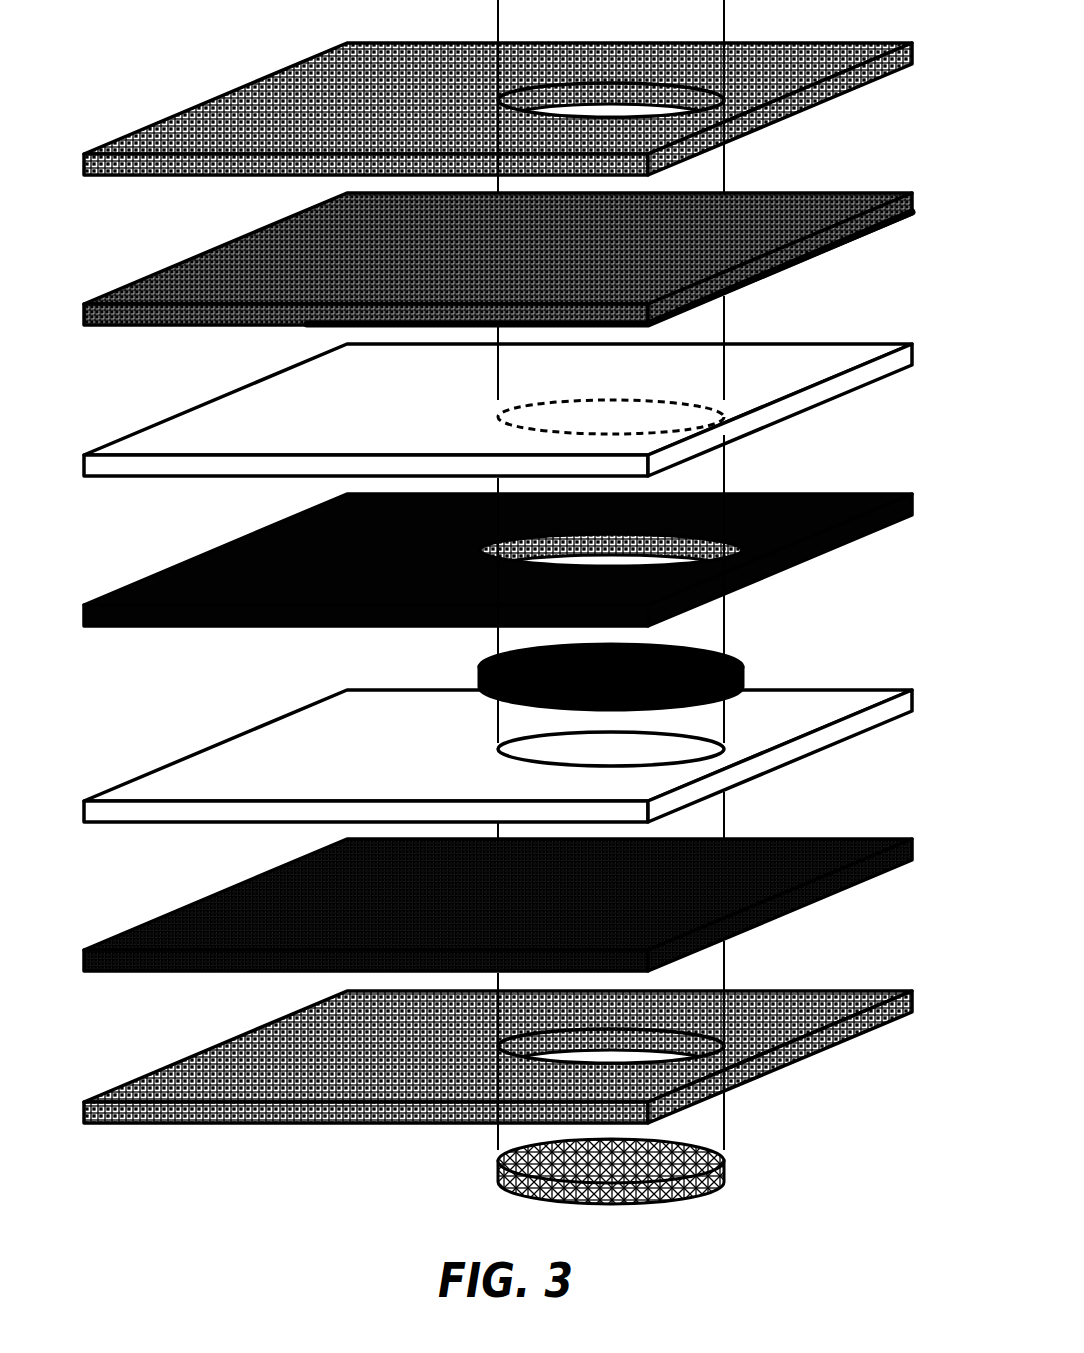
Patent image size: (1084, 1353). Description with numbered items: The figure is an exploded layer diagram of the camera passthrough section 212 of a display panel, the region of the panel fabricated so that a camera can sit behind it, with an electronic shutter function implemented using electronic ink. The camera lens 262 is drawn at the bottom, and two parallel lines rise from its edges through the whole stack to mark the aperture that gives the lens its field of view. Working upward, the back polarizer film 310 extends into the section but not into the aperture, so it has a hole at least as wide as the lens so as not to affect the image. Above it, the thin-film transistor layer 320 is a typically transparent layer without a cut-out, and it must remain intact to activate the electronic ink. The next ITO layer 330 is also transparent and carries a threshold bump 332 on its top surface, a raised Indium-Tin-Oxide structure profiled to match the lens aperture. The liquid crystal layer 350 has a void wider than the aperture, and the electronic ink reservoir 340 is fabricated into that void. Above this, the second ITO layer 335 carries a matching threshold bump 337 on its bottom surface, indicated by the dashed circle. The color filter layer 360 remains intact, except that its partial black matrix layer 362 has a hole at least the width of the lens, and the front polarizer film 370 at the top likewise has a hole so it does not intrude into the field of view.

The camera passthrough section 212 is at (142, 1214).
The camera lens 262 is at (681, 1200).
The back polarizer film 310 is at (148, 1077).
The thin-film transistor (TFT) layer 320 is at (148, 927).
The Indium-Tin-Oxide (ITO) layer 330 is at (148, 777).
The threshold bump 332 is at (500, 748).
The ITO layer 335 is at (148, 432).
The threshold bump 337 is at (500, 416).
The electronic ink reservoir 340 is at (740, 666).
The liquid crystal layer 350 is at (148, 579).
The color filter layer 360 is at (148, 279).
The black matrix layer 362 is at (830, 250).
The front polarizer film 370 is at (148, 130).